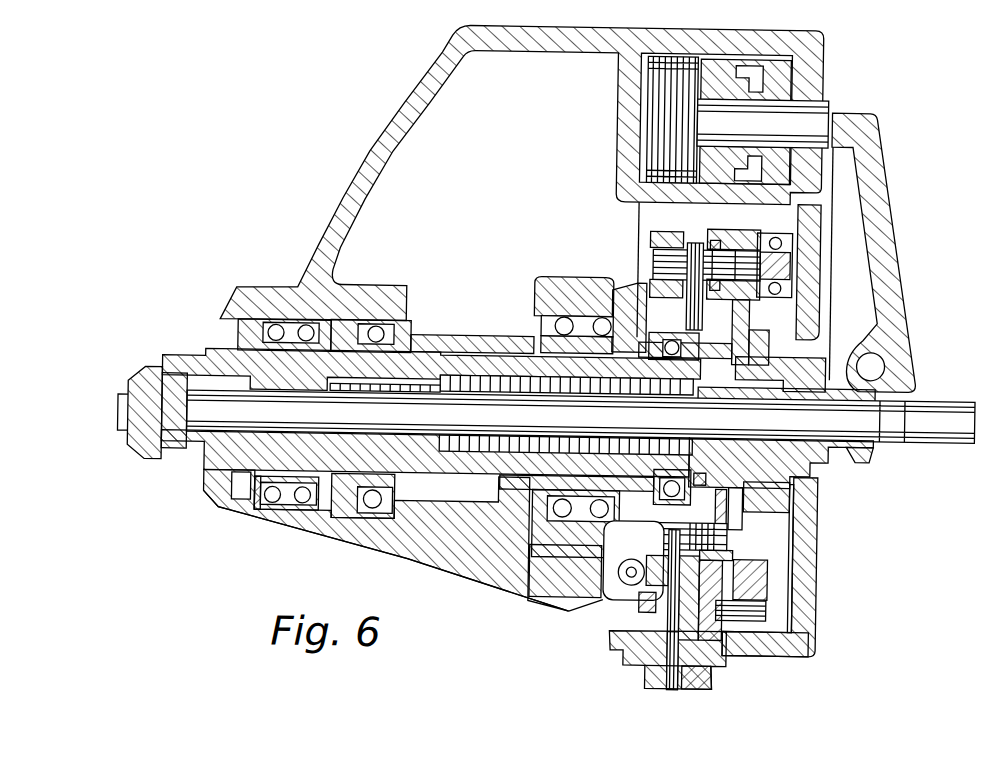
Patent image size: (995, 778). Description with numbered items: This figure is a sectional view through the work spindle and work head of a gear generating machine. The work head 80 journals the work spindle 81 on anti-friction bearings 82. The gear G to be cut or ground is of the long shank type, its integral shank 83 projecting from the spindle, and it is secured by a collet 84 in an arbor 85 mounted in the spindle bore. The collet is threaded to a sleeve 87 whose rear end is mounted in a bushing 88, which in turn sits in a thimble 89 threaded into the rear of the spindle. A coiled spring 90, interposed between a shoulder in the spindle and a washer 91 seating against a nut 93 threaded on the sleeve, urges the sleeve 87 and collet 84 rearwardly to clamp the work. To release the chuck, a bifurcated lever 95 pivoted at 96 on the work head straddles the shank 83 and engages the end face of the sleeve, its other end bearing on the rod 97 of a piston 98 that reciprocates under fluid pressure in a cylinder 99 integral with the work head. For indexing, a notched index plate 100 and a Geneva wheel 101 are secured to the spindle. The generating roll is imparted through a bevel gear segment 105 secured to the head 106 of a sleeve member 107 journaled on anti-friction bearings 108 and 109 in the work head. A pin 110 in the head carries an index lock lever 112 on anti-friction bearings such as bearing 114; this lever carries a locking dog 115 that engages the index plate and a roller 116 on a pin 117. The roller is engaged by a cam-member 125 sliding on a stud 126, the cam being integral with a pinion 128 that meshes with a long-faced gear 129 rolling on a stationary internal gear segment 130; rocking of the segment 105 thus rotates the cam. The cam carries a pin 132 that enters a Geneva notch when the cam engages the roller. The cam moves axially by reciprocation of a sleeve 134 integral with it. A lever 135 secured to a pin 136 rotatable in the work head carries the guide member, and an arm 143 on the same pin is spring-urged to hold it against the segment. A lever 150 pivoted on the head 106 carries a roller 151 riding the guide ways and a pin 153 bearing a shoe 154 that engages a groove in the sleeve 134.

The gear G is at (131, 454).
The work head 80 is at (557, 614).
The work spindle 81 is at (262, 516).
The anti-friction bearing 82 is at (292, 513).
The shank 83 is at (626, 288).
The collet 84 is at (176, 464).
The arbor 85 is at (230, 476).
The sleeve 87 is at (420, 491).
The bushing 88 is at (864, 457).
The thimble 89 is at (827, 470).
The coiled spring 90 is at (492, 480).
The washer 91 is at (675, 349).
The nut 93 is at (699, 297).
The bifurcated lever 95 is at (891, 294).
The pivot 96 is at (884, 361).
The rod 97 is at (824, 122).
The piston 98 is at (661, 134).
The cylinder 99 is at (632, 190).
The index plate 100 is at (796, 500).
The Geneva wheel 101 is at (741, 323).
The bevel gear segment 105 is at (779, 356).
The head 106 is at (657, 237).
The sleeve member 107 is at (474, 340).
The anti-friction bearing 108 is at (403, 333).
The anti-friction bearing 109 is at (570, 300).
The pin 110 is at (735, 259).
The index lock lever 112 is at (755, 258).
The anti-friction bearing 114 is at (738, 340).
The locking dog 115 is at (712, 239).
The roller 116 is at (731, 646).
The pin 117 is at (769, 646).
The cam-member 125 is at (729, 537).
The stud 126 is at (643, 557).
The pinion 128 is at (695, 487).
The long-faced gear 129 is at (802, 551).
The internal gear segment 130 is at (717, 668).
The pin 132 is at (760, 500).
The sleeve 134 is at (702, 607).
The lever 135 is at (648, 610).
The pin 136 is at (672, 687).
The arm 143 is at (710, 686).
The lever 150 is at (575, 624).
The roller 151 is at (660, 583).
The pin 153 is at (728, 576).
The shoe 154 is at (621, 573).